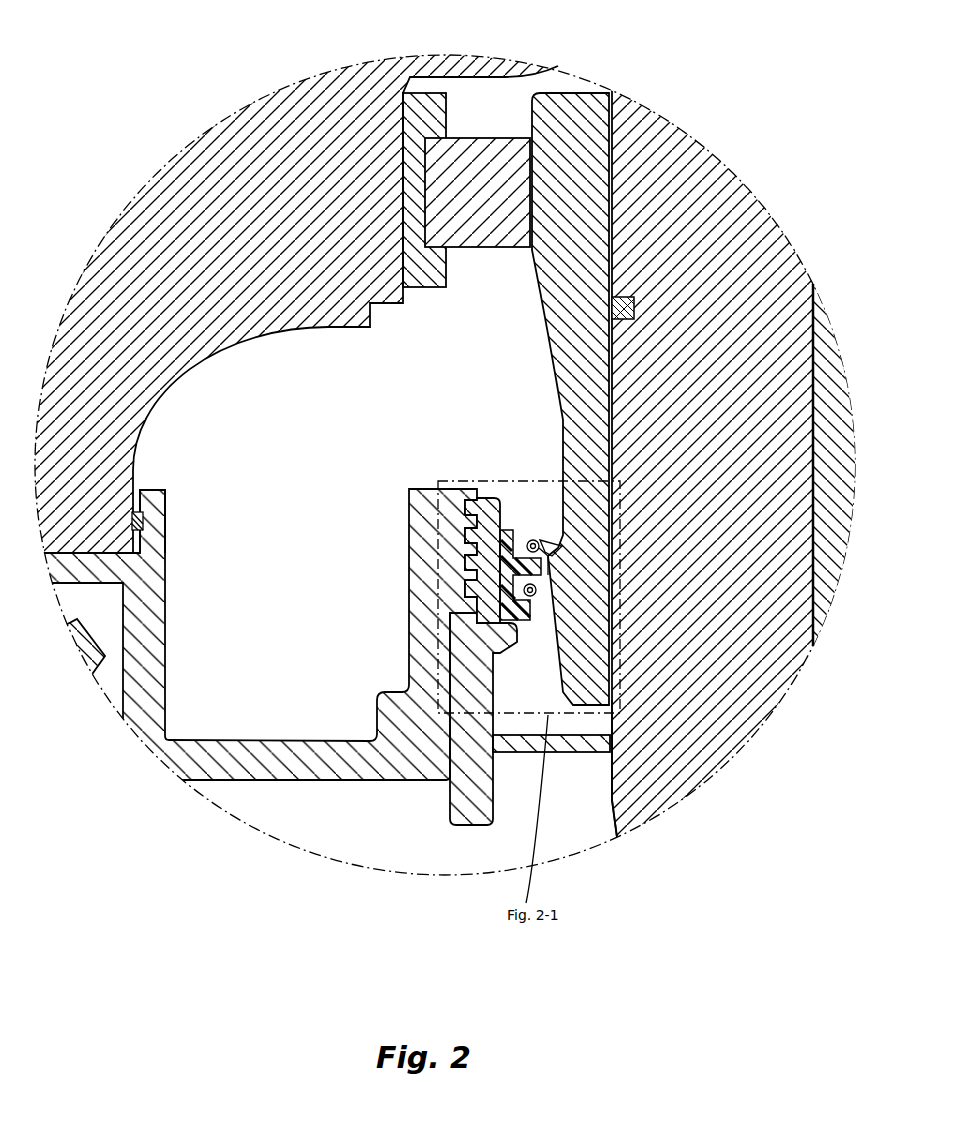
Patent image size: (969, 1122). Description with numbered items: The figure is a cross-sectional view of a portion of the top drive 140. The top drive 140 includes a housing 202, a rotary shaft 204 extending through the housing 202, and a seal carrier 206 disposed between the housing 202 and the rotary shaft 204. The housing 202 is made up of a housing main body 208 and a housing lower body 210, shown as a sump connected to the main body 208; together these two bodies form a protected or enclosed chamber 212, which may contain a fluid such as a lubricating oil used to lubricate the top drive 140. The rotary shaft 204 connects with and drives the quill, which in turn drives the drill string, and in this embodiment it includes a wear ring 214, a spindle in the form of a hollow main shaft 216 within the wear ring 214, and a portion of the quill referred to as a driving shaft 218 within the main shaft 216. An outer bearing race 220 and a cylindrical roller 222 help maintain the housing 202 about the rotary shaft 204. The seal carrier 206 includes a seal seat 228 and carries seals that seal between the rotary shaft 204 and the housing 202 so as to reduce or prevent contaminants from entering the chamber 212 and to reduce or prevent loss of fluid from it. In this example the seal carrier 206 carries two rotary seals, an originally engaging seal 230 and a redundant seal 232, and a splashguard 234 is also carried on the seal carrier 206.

The top drive 140 is at (141, 88).
The housing 202 is at (166, 512).
The rotary shaft 204 is at (745, 185).
The seal carrier 206 is at (449, 806).
The housing main body 208 is at (243, 333).
The housing lower body 210 is at (160, 544).
The enclosed chamber 212 is at (345, 471).
The wear ring 214 is at (548, 343).
The main shaft 216 is at (697, 783).
The driving shaft 218 is at (835, 533).
The outer bearing race 220 is at (446, 118).
The cylindrical roller 222 is at (476, 248).
The seal seat 228 is at (496, 640).
The originally engaging seal 230 is at (549, 600).
The redundant seal 232 is at (553, 540).
The splashguard 234 is at (570, 753).